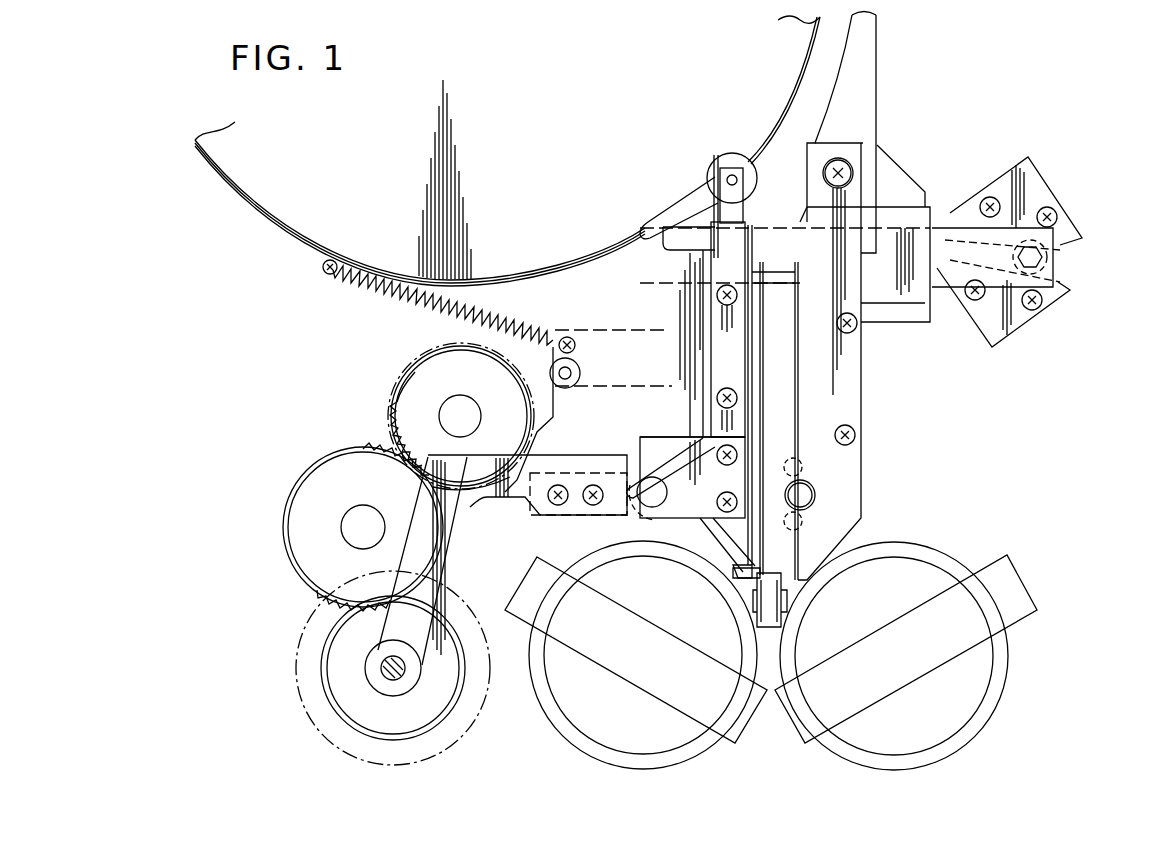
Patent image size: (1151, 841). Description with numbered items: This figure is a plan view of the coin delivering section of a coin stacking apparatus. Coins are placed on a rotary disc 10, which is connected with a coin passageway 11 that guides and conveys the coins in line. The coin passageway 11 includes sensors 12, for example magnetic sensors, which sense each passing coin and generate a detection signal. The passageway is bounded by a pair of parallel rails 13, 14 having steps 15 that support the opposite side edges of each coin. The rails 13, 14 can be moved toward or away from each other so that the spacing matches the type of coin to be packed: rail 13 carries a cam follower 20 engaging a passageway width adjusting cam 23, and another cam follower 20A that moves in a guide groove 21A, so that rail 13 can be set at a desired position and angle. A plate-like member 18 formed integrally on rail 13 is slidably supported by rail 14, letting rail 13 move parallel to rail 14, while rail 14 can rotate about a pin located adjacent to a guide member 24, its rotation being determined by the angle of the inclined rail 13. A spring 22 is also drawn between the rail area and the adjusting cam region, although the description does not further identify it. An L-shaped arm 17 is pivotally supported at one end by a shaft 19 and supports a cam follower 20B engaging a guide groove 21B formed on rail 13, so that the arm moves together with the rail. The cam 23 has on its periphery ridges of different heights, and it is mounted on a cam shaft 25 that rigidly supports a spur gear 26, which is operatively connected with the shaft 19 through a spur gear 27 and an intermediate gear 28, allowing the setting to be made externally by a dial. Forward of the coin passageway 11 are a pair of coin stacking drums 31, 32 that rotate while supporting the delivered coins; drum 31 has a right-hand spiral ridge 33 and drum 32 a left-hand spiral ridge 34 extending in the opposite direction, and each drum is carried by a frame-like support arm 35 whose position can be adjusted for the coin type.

The rotary disc 10 is at (543, 145).
The coin passageway 11 is at (778, 175).
The sensors 12 is at (803, 467).
The rail 13 is at (722, 332).
The rail 14 is at (838, 360).
The steps 15 is at (797, 335).
The L-shaped arm 17 is at (605, 467).
The plate-like member 18 is at (942, 235).
The shaft 19 is at (400, 680).
The cam follower 20 is at (566, 389).
The cam follower 20A is at (1047, 260).
The cam follower 20B is at (655, 505).
The guide groove 21A is at (1062, 248).
The guide groove 21B is at (676, 438).
The tension spring 22 is at (532, 325).
The passageway width adjusting cam 23 is at (420, 350).
The guide member 24 is at (876, 112).
The cam shaft 25 is at (852, 173).
The spur gear 26 is at (393, 388).
The spur gear 27 is at (330, 700).
The intermediate gear 28 is at (290, 498).
The coin stacking drum 31 is at (963, 738).
The coin stacking drum 32 is at (697, 738).
The spiral ridge 33 is at (1010, 643).
The spiral ridge 34 is at (535, 688).
The support arm 35 is at (537, 572).